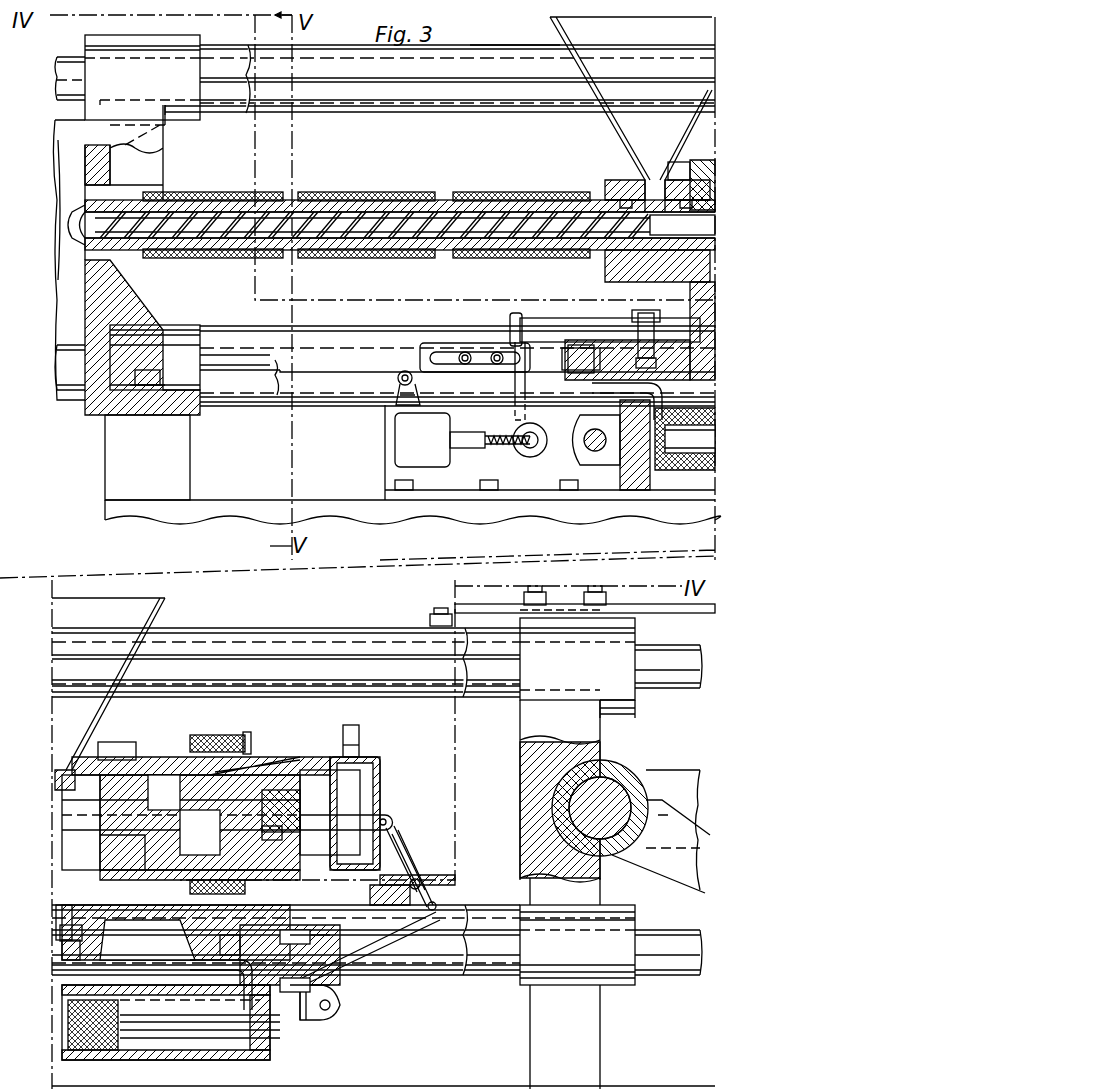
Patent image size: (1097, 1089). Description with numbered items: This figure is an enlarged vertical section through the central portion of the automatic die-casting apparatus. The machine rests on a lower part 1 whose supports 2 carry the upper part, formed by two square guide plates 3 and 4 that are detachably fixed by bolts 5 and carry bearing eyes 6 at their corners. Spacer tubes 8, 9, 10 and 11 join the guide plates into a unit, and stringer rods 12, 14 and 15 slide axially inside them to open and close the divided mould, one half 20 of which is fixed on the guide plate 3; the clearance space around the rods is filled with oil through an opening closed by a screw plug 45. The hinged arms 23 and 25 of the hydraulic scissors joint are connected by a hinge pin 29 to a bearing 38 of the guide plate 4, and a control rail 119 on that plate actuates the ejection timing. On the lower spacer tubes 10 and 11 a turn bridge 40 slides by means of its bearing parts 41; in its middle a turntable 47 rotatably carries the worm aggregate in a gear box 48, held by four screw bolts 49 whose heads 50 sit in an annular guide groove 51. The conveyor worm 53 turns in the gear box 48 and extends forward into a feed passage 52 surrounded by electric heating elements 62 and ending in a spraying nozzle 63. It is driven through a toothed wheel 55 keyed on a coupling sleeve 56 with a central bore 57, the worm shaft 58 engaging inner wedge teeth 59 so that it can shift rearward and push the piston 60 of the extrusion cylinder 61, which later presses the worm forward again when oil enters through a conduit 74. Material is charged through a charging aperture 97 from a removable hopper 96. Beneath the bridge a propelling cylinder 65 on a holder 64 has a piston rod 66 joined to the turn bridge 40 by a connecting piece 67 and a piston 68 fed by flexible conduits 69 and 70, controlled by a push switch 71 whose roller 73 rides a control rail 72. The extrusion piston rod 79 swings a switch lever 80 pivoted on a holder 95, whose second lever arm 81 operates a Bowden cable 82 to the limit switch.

The lower part 1 is at (105, 521).
The supports 2 is at (105, 458).
The square guide plate 3 is at (88, 326).
The square guide plate 4 is at (522, 760).
The bolts 5 is at (150, 385).
The bearing eyes 6 is at (150, 40).
The spacer tube 8 is at (228, 48).
The spacer tube 9 is at (512, 48).
The spacer tube 10 is at (500, 985).
The spacer tube 11 is at (265, 405).
The stringer rod 12 is at (70, 66).
The stringer rod 14 is at (672, 982).
The stringer rod 15 is at (70, 392).
The half of the die-casting mould 20 is at (60, 130).
The hinged arm 23 is at (680, 780).
The hinged arm 25 is at (680, 870).
The hinge pin 29 is at (583, 807).
The bearing 38 is at (610, 780).
The turn bridge 40 is at (270, 935).
The bearing part 41 is at (540, 318).
The screw plug 45 is at (434, 620).
The turntable 47 is at (700, 348).
The gear box 48 is at (170, 875).
The screw bolts 49 is at (640, 335).
The heads 50 is at (615, 345).
The annular guide groove 51 is at (218, 942).
The feed passage 52 is at (445, 190).
The conveyor worm 53 is at (365, 190).
The toothed wheel 55 is at (160, 762).
The coupling sleeve 56 is at (172, 760).
The central bore 57 is at (255, 775).
The shaft 58 is at (690, 275).
The inner wedge teeth 59 is at (300, 770).
The piston 60 is at (278, 836).
The extrusion cylinder 61 is at (372, 772).
The electric heating elements 62 is at (215, 190).
The spraying nozzle 63 is at (65, 255).
The holder 64 is at (526, 478).
The propelling cylinder 65 is at (142, 1055).
The piston rod 66 is at (218, 1040).
The connecting piece 67 is at (355, 1014).
The piston 68 is at (682, 478).
The flexible conduit 69 is at (592, 458).
The flexible conduit 70 is at (212, 980).
The push switch 71 is at (398, 442).
The control rail 72 is at (330, 375).
The roller 73 is at (408, 370).
The conduit 74 is at (360, 727).
The piston rod 79 is at (372, 806).
The switch lever 80 is at (395, 830).
The second lever arm 81 is at (440, 888).
The Bowden cable 82 is at (420, 920).
The holder 95 is at (410, 860).
The hopper 96 is at (553, 40).
The charging aperture 97 is at (625, 196).
The control rail 119 is at (710, 612).